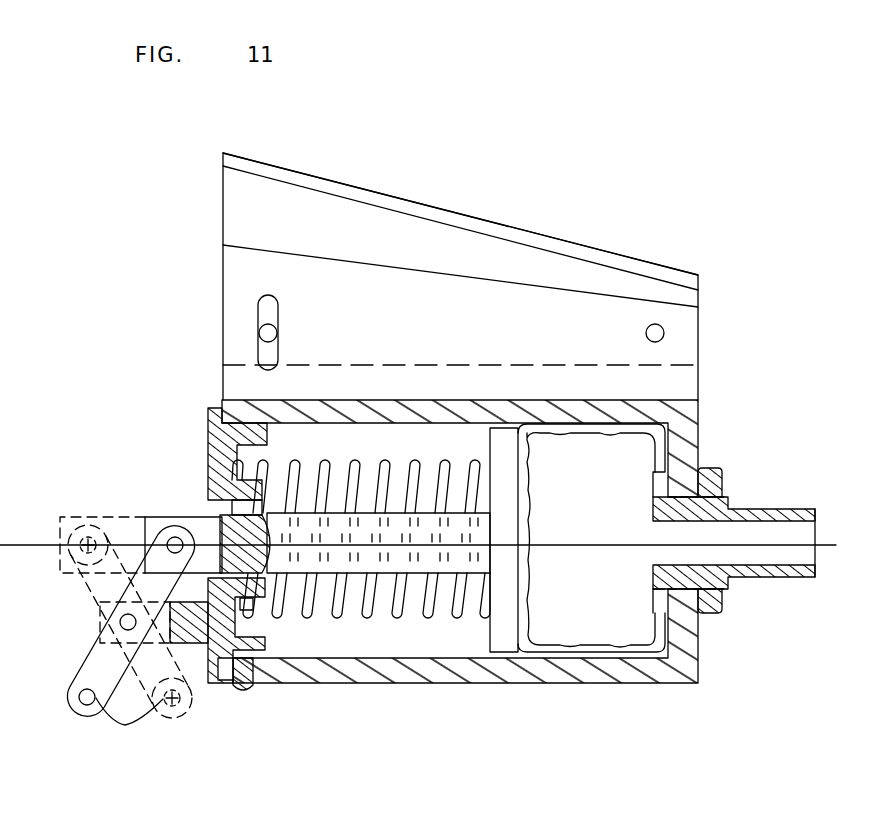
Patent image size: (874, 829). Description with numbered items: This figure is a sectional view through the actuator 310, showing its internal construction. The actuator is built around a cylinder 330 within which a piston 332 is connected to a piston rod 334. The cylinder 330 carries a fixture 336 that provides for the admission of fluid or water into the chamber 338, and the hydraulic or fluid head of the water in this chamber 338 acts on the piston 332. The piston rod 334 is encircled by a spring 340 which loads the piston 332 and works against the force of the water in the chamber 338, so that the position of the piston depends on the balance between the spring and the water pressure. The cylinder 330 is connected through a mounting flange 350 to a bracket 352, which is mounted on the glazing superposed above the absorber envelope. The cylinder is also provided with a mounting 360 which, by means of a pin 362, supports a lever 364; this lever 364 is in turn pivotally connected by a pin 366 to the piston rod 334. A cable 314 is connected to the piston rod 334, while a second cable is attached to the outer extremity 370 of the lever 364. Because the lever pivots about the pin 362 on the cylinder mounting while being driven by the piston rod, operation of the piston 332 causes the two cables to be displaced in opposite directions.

The actuator 310 is at (349, 687).
The cable 314 is at (47, 543).
The cylinder 330 is at (453, 683).
The piston 332 is at (508, 452).
The piston rod 334 is at (437, 522).
The fixture 336 is at (757, 510).
The chamber 338 is at (594, 628).
The spring 340 is at (357, 465).
The mounting flange 350 is at (223, 282).
The bracket 352 is at (372, 188).
The mounting 360 is at (193, 647).
The pin 362 is at (100, 623).
The lever 364 is at (98, 665).
The pin 366 is at (177, 538).
The outer extremity of the lever 370 is at (130, 640).